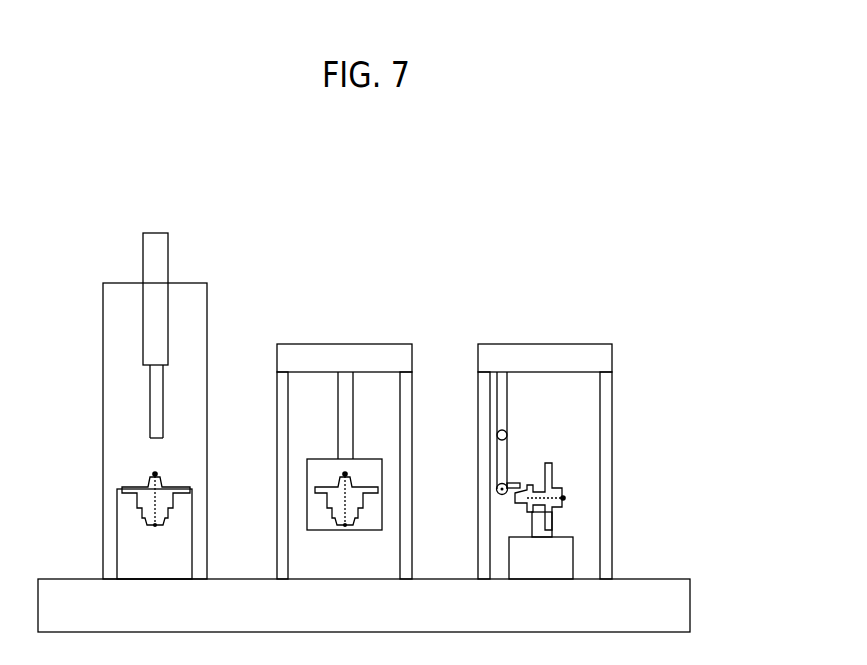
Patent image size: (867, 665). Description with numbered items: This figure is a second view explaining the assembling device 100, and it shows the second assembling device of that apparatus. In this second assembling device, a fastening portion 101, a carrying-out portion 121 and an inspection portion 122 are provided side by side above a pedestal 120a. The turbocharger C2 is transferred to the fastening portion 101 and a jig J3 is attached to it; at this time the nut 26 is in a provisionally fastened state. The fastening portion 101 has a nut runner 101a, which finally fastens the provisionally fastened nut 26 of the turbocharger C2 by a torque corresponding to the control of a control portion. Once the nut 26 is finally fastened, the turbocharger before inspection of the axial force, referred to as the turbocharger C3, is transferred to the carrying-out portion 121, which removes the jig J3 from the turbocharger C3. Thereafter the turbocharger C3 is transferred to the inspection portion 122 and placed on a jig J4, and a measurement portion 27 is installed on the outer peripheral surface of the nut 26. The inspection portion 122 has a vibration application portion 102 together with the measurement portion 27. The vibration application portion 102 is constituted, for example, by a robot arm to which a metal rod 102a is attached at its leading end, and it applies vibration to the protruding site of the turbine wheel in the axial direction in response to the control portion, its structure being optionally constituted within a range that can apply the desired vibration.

The assembling device 100 is at (753, 110).
The pedestal 120a is at (388, 623).
The fastening portion 101 is at (192, 283).
The nut runner 101a is at (163, 400).
The carrying-out portion 121 is at (313, 343).
The inspection portion 122 is at (505, 343).
The vibration application portion 102 is at (497, 462).
The metal rod 102a is at (516, 485).
The nut 26 is at (152, 474).
The measurement portion 27 is at (563, 497).
The turbocharger C2 is at (140, 508).
The turbocharger C3 is at (362, 497).
The jig J3 is at (172, 568).
The jig J4 is at (557, 568).